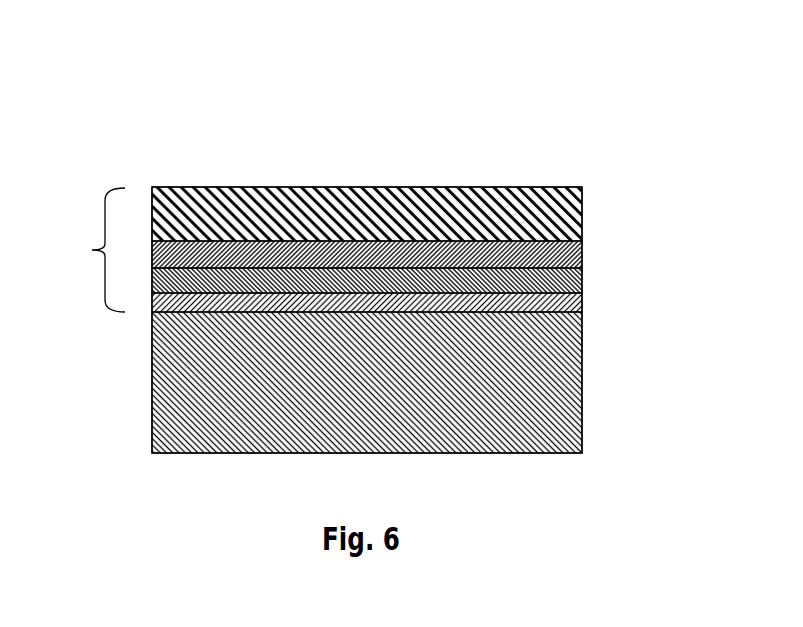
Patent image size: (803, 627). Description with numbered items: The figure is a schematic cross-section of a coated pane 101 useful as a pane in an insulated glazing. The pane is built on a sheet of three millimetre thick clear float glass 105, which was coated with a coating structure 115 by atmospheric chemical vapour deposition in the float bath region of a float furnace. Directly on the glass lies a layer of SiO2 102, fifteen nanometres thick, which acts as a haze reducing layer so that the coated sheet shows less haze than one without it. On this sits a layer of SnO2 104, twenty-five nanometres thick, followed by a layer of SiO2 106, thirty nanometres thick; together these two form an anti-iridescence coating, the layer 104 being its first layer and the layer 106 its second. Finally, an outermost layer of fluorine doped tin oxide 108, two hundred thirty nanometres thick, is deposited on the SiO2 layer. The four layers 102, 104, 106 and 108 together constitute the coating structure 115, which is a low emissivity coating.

The coated pane 101 is at (218, 138).
The layer of SiO2 102 is at (581, 303).
The layer of SnO2 104 is at (582, 278).
The clear float glass 105 is at (573, 398).
The layer of SiO2 106 is at (582, 258).
The layer of fluorine doped tin oxide 108 is at (562, 214).
The coating structure 115 is at (92, 250).